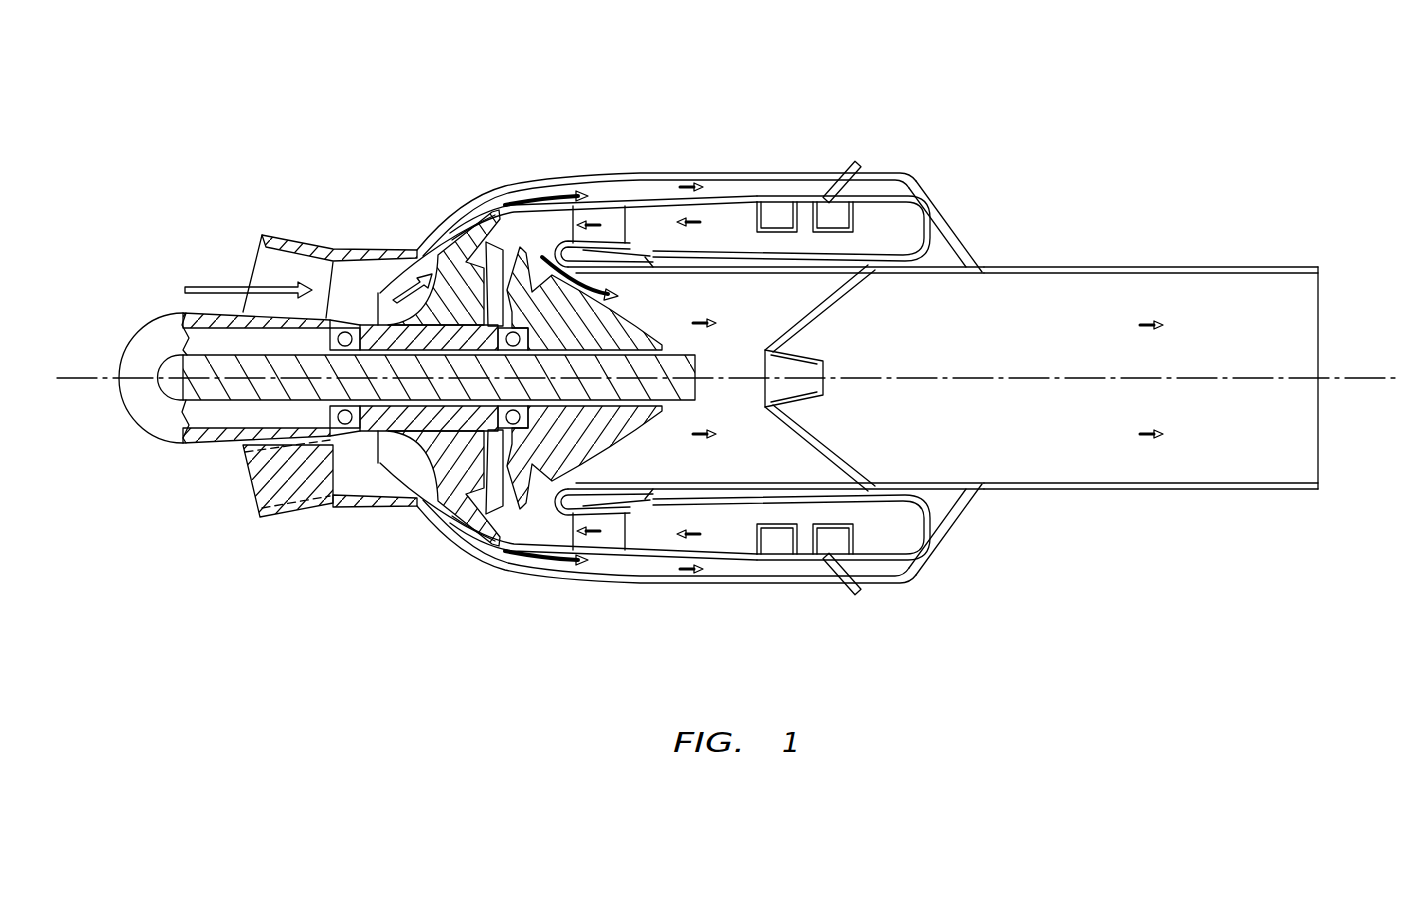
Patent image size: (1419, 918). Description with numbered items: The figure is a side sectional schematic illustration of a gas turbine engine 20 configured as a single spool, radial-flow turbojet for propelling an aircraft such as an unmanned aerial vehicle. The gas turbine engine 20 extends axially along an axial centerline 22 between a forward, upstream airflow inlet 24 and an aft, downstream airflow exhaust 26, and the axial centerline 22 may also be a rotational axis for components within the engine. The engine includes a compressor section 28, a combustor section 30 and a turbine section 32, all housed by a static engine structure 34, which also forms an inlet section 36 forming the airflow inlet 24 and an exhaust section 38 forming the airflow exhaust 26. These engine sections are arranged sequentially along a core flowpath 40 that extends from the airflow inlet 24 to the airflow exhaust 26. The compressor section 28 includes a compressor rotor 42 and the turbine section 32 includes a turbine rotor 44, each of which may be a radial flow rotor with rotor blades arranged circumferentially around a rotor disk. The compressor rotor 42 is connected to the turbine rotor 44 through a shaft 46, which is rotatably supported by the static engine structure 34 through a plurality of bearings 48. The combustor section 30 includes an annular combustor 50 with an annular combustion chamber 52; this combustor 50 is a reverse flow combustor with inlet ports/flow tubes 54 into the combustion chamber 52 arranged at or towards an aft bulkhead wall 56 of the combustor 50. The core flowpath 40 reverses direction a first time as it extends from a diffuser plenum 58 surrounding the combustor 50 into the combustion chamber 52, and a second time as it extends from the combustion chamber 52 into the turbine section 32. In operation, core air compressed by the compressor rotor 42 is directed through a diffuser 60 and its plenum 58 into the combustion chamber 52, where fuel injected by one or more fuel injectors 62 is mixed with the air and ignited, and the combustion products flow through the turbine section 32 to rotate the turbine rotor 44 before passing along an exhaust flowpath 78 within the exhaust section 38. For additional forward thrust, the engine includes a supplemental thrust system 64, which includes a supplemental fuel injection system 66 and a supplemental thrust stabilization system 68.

The gas turbine engine 20 is at (242, 124).
The axial centerline 22 is at (62, 380).
The airflow inlet 24 is at (253, 268).
The airflow exhaust 26 is at (1320, 307).
The compressor section 28 is at (417, 248).
The combustor section 30 is at (738, 166).
The turbine section 32 is at (534, 236).
The static engine structure 34 is at (452, 548).
The inlet section 36 is at (296, 240).
The exhaust section 38 is at (1003, 266).
The core flowpath 40 is at (467, 238).
The compressor rotor 42 is at (405, 455).
The turbine rotor 44 is at (570, 443).
The shaft 46 is at (690, 345).
The bearings 48 is at (517, 415).
The annular combustor 50 is at (895, 192).
The annular combustion chamber 52 is at (870, 239).
The inlet ports/flow tubes 54 is at (743, 207).
The aft bulkhead wall 56 is at (940, 213).
The diffuser plenum 58 is at (945, 255).
The diffuser 60 is at (672, 178).
The fuel injectors 62 is at (827, 193).
The supplemental thrust system 64 is at (910, 305).
The supplemental fuel injection system 66 is at (905, 502).
The supplemental thrust stabilization system 68 is at (833, 433).
The exhaust flowpath 78 is at (898, 362).